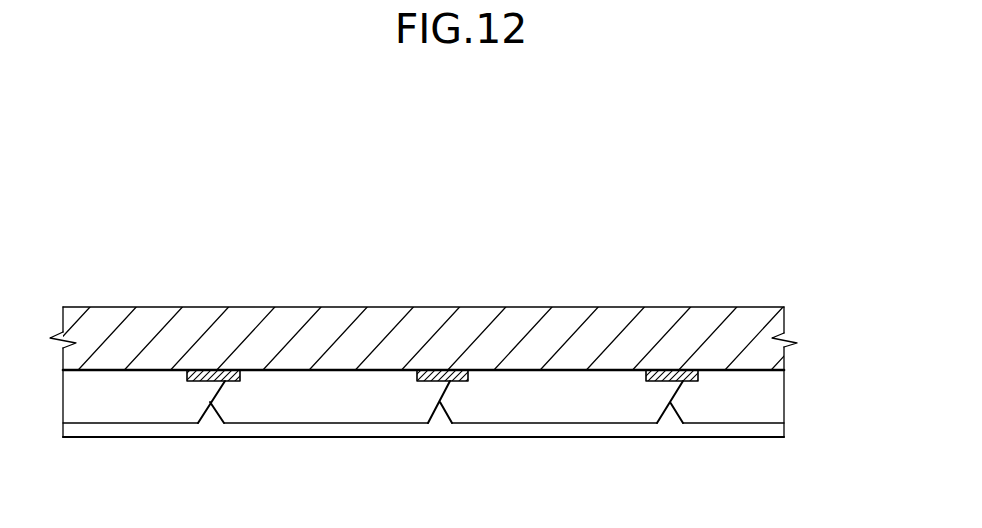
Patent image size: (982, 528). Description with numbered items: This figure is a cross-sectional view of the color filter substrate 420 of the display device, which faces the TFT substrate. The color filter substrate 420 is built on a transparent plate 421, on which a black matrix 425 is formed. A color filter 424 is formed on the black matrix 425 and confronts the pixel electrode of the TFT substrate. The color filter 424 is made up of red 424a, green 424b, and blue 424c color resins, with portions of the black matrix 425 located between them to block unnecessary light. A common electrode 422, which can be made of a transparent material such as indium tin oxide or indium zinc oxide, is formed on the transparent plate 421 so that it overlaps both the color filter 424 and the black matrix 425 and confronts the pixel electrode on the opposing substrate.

The color filter substrate 420 is at (447, 355).
The transparent plate 421 is at (785, 317).
The common electrode 422 is at (578, 423).
The color filter 424 is at (360, 304).
The red color resin 424a is at (153, 382).
The green color resin 424b is at (327, 381).
The blue color resin 424c is at (517, 382).
The black matrix 425 is at (675, 378).